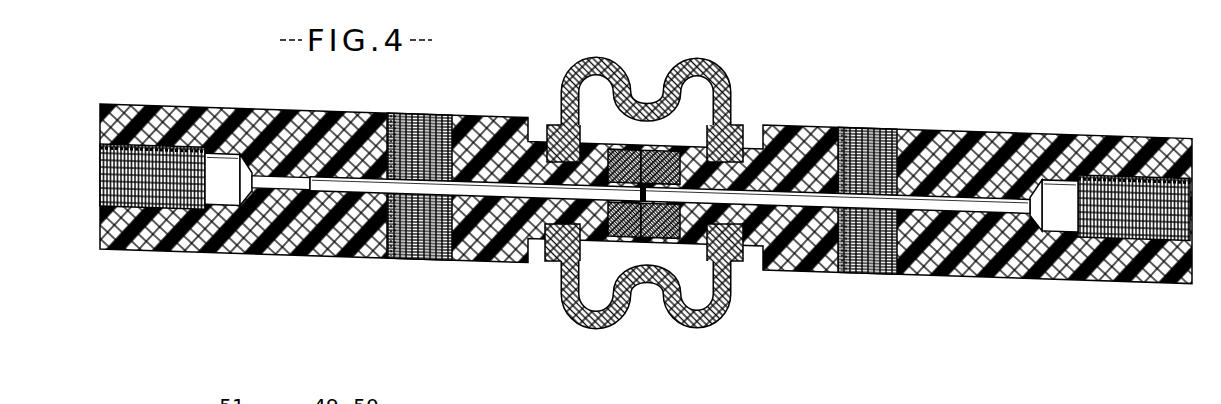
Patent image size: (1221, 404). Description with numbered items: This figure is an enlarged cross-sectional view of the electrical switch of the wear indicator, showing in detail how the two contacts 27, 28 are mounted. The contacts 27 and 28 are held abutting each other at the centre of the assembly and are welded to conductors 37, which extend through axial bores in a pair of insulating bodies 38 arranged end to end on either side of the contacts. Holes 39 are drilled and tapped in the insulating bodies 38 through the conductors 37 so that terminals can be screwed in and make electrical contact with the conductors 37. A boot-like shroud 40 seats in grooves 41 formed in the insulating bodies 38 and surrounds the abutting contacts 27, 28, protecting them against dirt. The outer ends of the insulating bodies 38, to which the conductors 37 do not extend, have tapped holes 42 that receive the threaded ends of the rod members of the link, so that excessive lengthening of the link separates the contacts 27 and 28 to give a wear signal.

The contact 27 is at (617, 230).
The contact 28 is at (725, 268).
The conductor 37 is at (349, 194).
The insulating body 38 is at (476, 123).
The hole 39 is at (420, 128).
The boot-like shroud 40 is at (623, 62).
The groove 41 is at (588, 140).
The tapped hole 42 is at (157, 142).